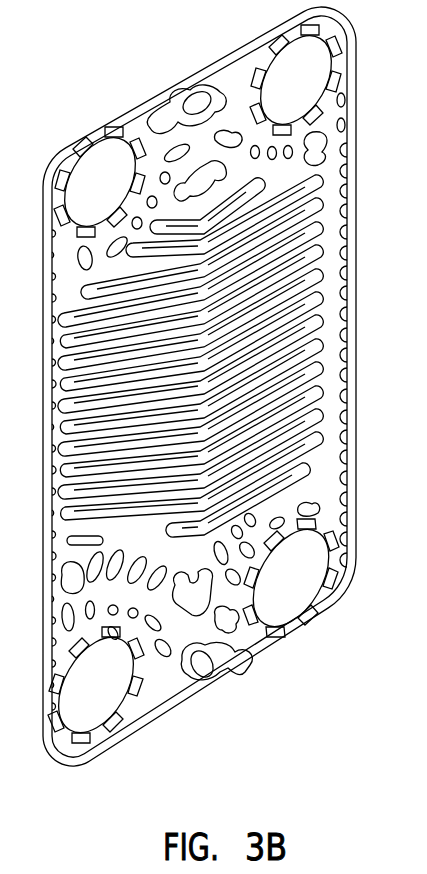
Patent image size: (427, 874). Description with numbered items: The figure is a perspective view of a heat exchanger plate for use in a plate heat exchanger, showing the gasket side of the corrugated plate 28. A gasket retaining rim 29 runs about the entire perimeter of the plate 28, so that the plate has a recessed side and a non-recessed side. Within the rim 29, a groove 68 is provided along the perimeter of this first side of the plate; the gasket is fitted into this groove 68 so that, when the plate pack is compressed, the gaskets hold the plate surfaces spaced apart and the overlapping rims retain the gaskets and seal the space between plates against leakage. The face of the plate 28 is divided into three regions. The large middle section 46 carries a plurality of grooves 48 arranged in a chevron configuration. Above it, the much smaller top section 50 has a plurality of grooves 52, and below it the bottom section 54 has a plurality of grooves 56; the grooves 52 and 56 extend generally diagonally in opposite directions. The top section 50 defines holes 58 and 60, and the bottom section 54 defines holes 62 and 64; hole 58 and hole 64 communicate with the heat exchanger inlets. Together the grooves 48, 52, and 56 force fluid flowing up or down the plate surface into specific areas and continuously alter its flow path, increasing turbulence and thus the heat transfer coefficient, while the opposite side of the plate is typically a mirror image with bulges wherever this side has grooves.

The corrugated plate 28 is at (358, 134).
The gasket retaining rim 29 is at (348, 188).
The middle section 46 is at (290, 300).
The grooves 48 is at (300, 368).
The top section 50 is at (228, 74).
The grooves 52 is at (141, 114).
The bottom section 54 is at (232, 668).
The grooves 56 is at (242, 628).
The hole 58 is at (100, 136).
The hole 60 is at (308, 68).
The hole 62 is at (97, 703).
The hole 64 is at (300, 580).
The groove 68 is at (323, 432).